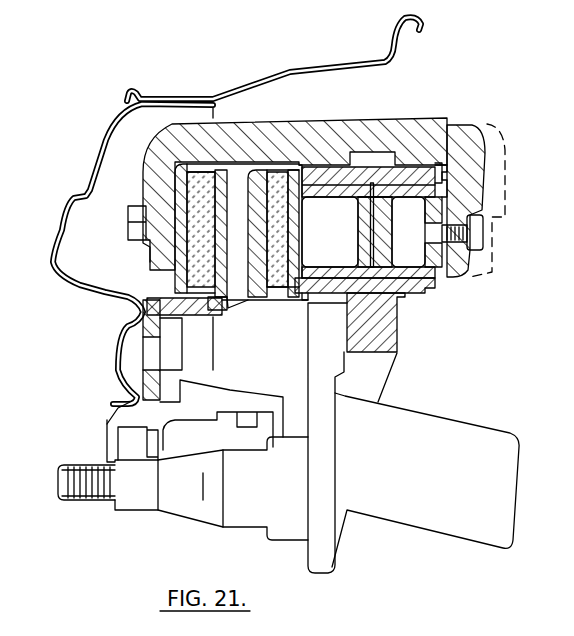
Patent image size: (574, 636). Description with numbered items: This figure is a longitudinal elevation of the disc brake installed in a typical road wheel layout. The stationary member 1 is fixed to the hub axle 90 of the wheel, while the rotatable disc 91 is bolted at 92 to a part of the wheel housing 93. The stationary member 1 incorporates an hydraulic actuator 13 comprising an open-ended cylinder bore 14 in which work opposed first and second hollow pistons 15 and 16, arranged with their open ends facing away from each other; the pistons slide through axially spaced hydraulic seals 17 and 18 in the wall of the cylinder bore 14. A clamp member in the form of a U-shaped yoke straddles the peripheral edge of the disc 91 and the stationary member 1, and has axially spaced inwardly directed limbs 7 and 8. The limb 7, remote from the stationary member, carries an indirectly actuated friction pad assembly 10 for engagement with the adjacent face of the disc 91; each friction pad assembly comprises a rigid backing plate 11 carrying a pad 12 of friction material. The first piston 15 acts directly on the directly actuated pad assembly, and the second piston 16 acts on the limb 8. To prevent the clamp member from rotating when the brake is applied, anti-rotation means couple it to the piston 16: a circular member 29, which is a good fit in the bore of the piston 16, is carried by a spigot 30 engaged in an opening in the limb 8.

The stationary member 1 is at (380, 305).
The limb 7 is at (152, 162).
The limb 8 is at (466, 152).
The indirectly actuated friction pad assembly 10 is at (204, 185).
The rigid backing plate 11 is at (299, 186).
The pad 12 is at (278, 186).
The hydraulic actuator 13 is at (372, 182).
The cylinder bore 14 is at (408, 192).
The first piston 15 is at (347, 186).
The second piston 16 is at (391, 190).
The hydraulic seal 17 is at (423, 290).
The hydraulic seal 18 is at (310, 306).
The circular member 29 is at (434, 192).
The spigot 30 is at (457, 268).
The hub axle 90 is at (173, 490).
The rotatable disc 91 is at (246, 178).
The bolt 92 is at (153, 355).
The wheel housing 93 is at (72, 216).